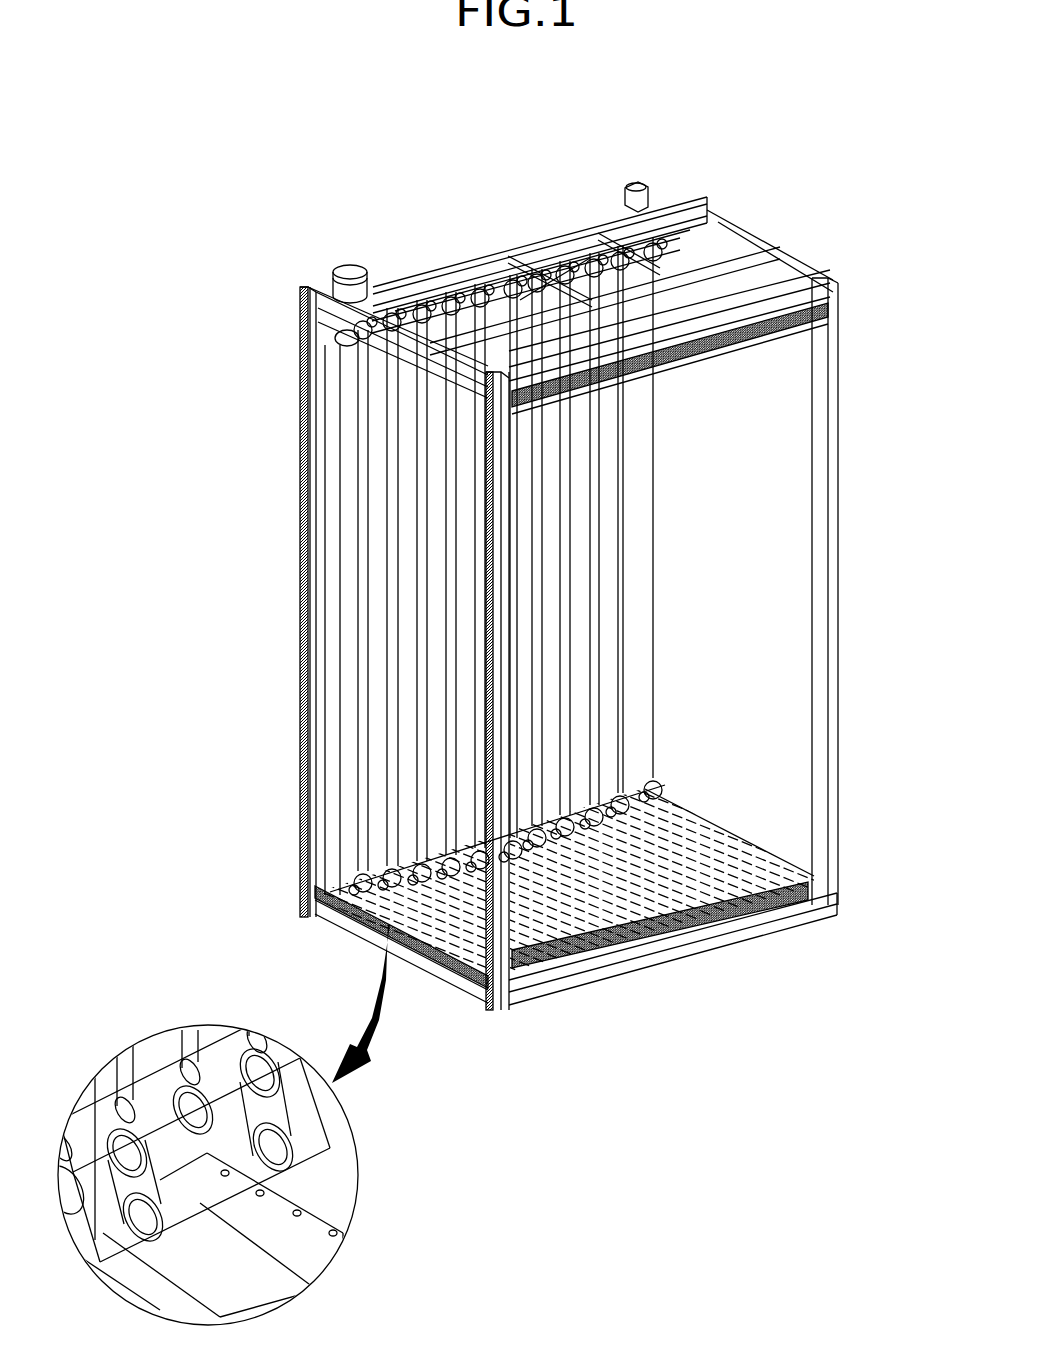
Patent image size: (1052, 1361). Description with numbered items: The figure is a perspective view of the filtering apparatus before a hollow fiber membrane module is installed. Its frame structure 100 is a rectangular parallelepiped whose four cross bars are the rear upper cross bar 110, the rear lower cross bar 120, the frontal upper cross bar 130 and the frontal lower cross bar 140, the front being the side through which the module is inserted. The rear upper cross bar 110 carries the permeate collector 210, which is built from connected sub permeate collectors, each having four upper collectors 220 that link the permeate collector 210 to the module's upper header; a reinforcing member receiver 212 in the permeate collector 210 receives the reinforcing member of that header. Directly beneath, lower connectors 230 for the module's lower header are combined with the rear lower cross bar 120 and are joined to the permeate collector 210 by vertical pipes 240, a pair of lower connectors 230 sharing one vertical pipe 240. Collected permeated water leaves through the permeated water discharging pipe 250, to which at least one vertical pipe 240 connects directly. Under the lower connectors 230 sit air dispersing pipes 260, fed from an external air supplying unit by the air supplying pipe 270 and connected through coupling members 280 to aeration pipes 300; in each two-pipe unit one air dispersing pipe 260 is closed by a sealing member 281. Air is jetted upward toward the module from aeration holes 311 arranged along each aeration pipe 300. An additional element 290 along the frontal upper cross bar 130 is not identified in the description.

The frame structure 100 is at (851, 590).
The rear upper cross bar 110 is at (525, 235).
The rear lower cross bar 120 is at (328, 885).
The frontal upper cross bar 130 is at (788, 337).
The frontal lower cross bar 140 is at (745, 942).
The permeate collector 210 is at (393, 268).
The reinforcing member receiver 212 is at (162, 1052).
The upper collector 220 is at (462, 252).
The lower connector 230 is at (343, 890).
The vertical pipe 240 is at (347, 757).
The permeated water discharging pipe 250 is at (330, 270).
The air dispersing pipe 260 is at (95, 1060).
The air supplying pipe 270 is at (689, 203).
The coupling member 280 is at (310, 1113).
The sealing member 281 is at (283, 1148).
The support bar 290 is at (680, 358).
The aeration pipe 300 is at (463, 942).
The aeration hole 311 is at (338, 1232).